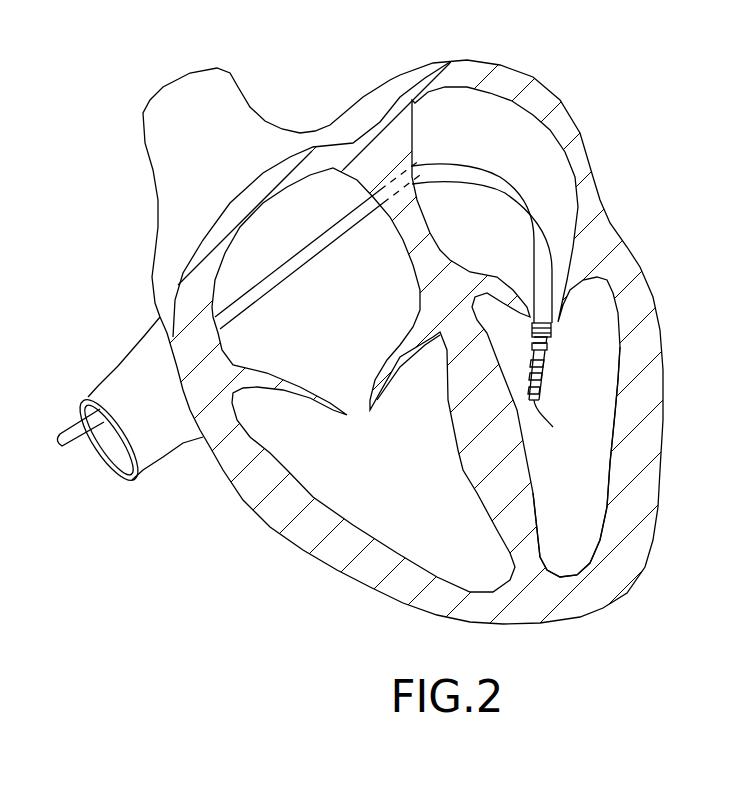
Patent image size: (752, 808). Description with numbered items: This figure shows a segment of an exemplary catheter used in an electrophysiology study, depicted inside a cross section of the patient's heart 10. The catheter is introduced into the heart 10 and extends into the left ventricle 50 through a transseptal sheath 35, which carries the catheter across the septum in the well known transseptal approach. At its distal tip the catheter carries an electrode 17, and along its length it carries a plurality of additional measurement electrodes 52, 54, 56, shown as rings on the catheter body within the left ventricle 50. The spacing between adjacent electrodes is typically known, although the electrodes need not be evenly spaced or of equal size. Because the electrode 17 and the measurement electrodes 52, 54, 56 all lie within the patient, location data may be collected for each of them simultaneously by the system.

The heart 10 is at (567, 104).
The transseptal sheath 35 is at (476, 167).
The left ventricle 50 is at (596, 318).
The measurement electrode 56 is at (550, 342).
The measurement electrode 54 is at (545, 365).
The measurement electrode 52 is at (540, 385).
The electrode 17 is at (545, 425).